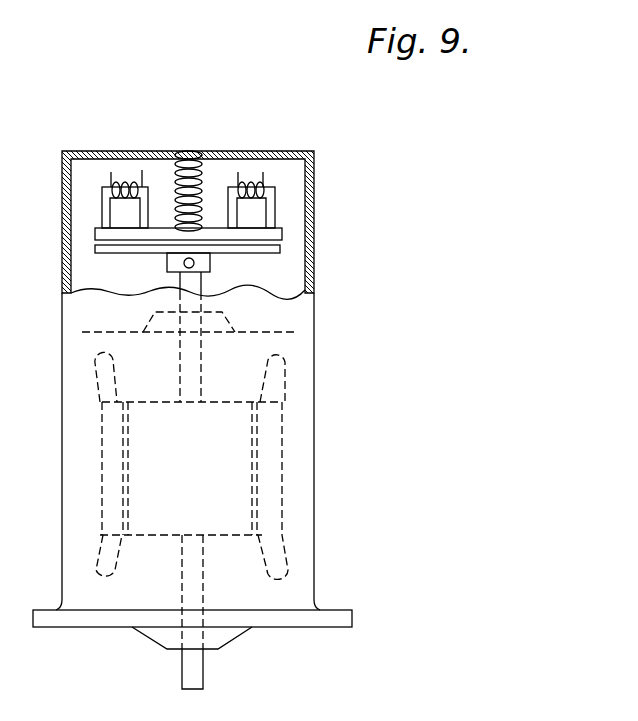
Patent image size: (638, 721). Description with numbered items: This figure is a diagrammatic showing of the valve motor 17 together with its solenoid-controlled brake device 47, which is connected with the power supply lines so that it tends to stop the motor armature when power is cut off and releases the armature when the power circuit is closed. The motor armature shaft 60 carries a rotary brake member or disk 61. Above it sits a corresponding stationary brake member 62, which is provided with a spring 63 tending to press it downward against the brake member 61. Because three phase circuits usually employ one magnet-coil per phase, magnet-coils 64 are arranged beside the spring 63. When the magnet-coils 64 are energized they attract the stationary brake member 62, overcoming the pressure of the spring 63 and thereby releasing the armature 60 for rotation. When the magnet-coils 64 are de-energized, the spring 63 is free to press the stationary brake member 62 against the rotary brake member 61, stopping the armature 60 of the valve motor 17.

The valve motor 17 is at (318, 468).
The solenoid-controlled brake device 47 is at (289, 240).
The motor armature shaft 60 is at (179, 281).
The brake member or disk 61 is at (265, 258).
The stationary brake member 62 is at (288, 230).
The spring 63 is at (216, 180).
The magnet-coils 64 is at (98, 219).